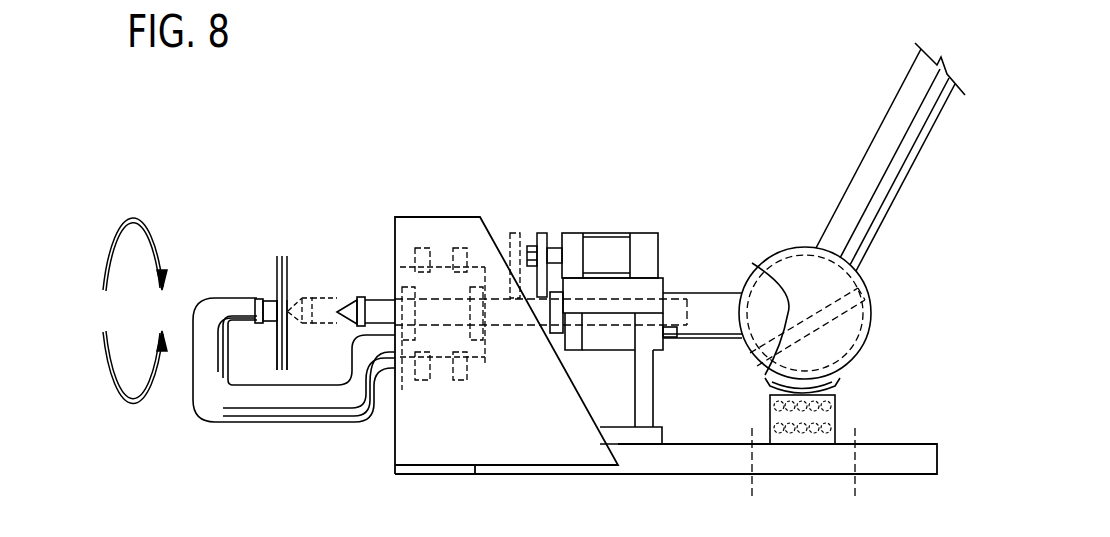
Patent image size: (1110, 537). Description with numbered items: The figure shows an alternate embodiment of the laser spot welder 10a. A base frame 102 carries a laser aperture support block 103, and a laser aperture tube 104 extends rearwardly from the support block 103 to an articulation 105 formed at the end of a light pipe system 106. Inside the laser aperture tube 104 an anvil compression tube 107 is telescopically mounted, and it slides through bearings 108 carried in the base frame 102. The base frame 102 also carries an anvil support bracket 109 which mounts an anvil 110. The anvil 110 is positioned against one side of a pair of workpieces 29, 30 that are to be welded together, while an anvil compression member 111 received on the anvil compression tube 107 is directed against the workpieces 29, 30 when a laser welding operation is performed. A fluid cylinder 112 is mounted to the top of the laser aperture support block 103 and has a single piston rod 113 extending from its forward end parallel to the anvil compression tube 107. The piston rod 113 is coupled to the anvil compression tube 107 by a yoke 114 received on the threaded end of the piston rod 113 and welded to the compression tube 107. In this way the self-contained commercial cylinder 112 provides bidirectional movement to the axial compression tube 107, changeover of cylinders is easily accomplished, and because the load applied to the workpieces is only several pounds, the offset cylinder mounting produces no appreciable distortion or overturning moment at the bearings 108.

The laser spot welder 10a is at (733, 205).
The workpiece 29 is at (277, 351).
The workpiece 30 is at (287, 351).
The base frame 102 is at (525, 459).
The laser aperture support block 103 is at (653, 399).
The laser aperture tube 104 is at (722, 338).
The articulation 105 is at (867, 336).
The light pipe system 106 is at (894, 192).
The anvil compression tube 107 is at (379, 298).
The bearings 108 is at (404, 391).
The anvil support bracket 109 is at (249, 423).
The anvil 110 is at (269, 300).
The anvil compression member 111 is at (302, 290).
The fluid cylinder 112 is at (620, 269).
The piston rod 113 is at (553, 248).
The yoke 114 is at (541, 233).